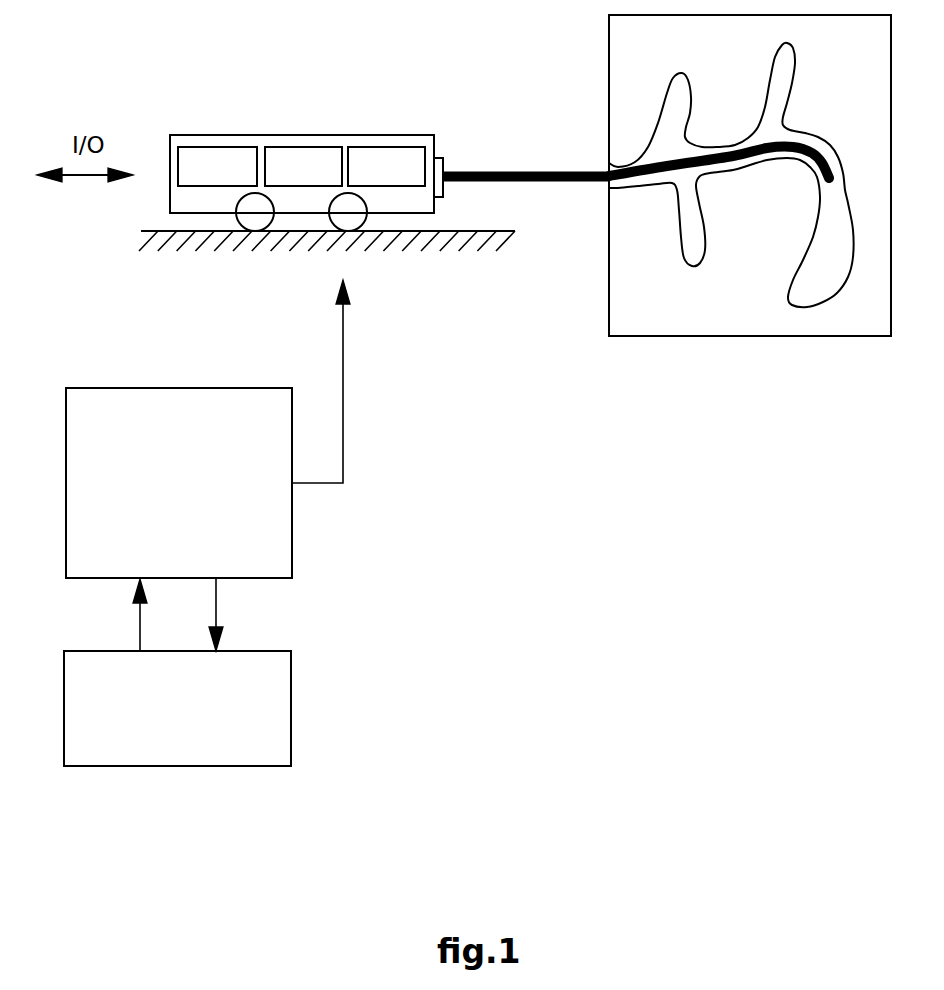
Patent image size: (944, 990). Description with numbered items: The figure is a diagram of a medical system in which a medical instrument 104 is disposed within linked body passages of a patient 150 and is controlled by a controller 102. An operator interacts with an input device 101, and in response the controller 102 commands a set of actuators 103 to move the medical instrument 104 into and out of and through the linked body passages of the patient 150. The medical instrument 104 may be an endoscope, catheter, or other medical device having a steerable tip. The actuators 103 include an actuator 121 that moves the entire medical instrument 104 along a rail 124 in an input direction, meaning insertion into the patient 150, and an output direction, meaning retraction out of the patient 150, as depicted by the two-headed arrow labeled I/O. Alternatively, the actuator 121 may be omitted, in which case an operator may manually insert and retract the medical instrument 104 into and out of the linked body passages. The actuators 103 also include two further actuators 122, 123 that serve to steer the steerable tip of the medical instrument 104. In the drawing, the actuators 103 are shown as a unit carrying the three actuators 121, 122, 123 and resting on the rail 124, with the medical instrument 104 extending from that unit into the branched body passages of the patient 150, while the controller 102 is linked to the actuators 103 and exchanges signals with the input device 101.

The input device 101 is at (275, 682).
The controller 102 is at (275, 421).
The actuators 103 is at (306, 135).
The medical instrument 104 is at (475, 172).
The actuator 121 is at (240, 178).
The actuator 122 is at (325, 178).
The actuator 123 is at (408, 178).
The rail 124 is at (462, 231).
The patient 150 is at (684, 58).